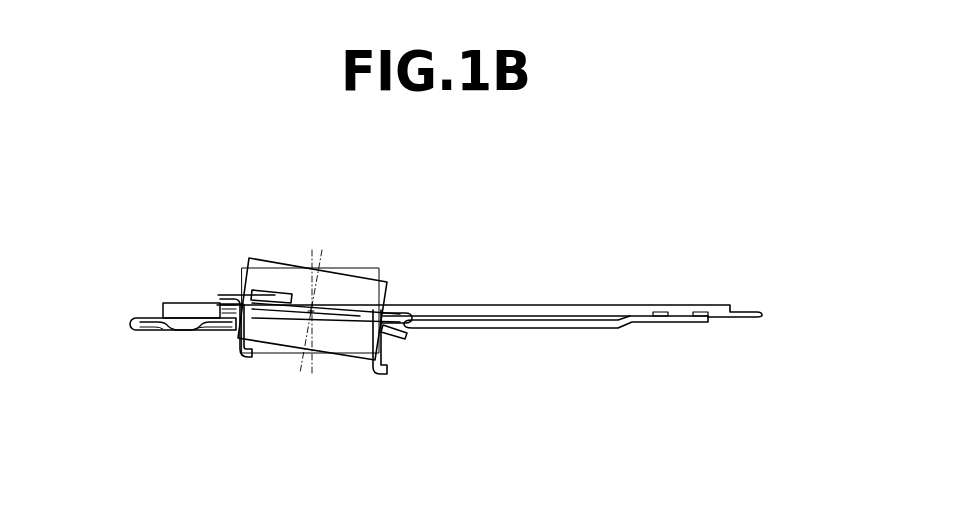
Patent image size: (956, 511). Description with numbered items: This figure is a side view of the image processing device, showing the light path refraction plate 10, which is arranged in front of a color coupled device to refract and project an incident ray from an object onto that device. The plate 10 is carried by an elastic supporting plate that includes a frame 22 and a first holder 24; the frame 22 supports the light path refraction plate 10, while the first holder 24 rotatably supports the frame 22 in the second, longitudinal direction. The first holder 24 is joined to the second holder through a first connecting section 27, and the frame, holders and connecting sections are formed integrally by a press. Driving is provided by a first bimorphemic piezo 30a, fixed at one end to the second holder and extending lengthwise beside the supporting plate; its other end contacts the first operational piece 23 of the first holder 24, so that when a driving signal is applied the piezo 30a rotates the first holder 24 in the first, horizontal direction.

The light path refraction plate 10 is at (342, 288).
The frame 22 is at (377, 370).
The first operational piece 23 is at (267, 290).
The first holder 24 is at (186, 305).
The first connecting section 27 is at (470, 328).
The first bimorphemic piezo 30a is at (563, 305).